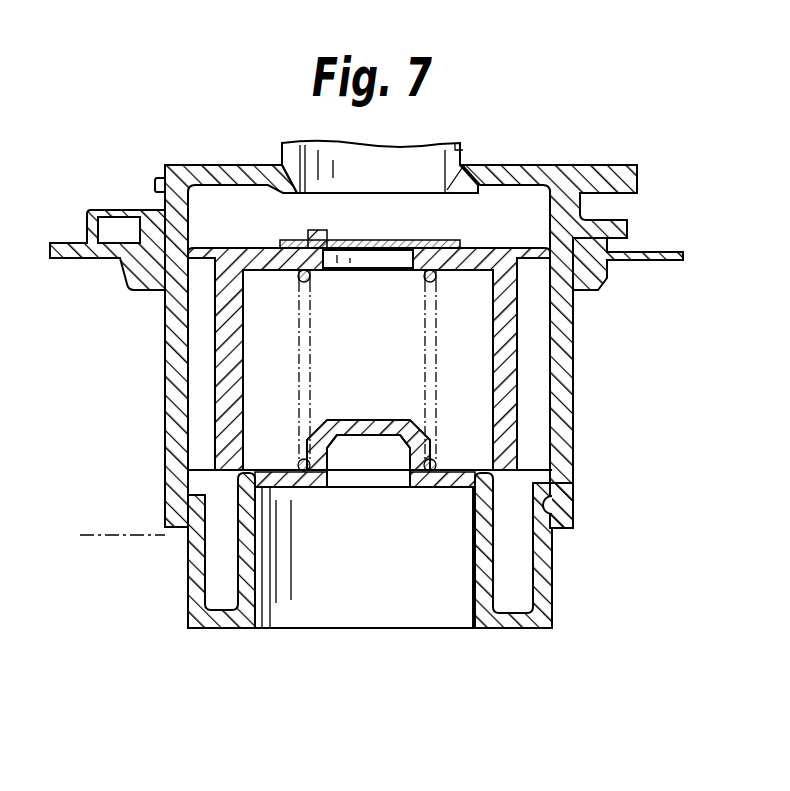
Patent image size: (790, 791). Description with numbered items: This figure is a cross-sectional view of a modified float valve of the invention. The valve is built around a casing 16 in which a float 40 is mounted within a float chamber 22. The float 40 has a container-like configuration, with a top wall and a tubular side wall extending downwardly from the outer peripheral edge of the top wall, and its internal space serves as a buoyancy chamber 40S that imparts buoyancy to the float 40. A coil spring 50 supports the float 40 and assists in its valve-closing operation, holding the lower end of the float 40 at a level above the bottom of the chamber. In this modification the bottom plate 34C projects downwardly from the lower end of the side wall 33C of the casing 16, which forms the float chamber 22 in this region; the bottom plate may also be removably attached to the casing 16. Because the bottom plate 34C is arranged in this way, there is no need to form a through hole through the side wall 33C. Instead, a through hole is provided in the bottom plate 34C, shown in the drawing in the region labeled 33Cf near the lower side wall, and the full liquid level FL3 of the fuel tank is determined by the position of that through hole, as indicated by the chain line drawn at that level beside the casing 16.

The float chamber 22 is at (500, 192).
The buoyancy chamber 40S is at (391, 327).
The float 40 is at (222, 372).
The side wall 33C is at (170, 403).
The casing 16 is at (575, 372).
The coil spring 50 is at (308, 390).
The full liquid level FL3 is at (88, 533).
The lower housing side wall surface 33Cf is at (188, 568).
The bottom plate 34C is at (245, 620).